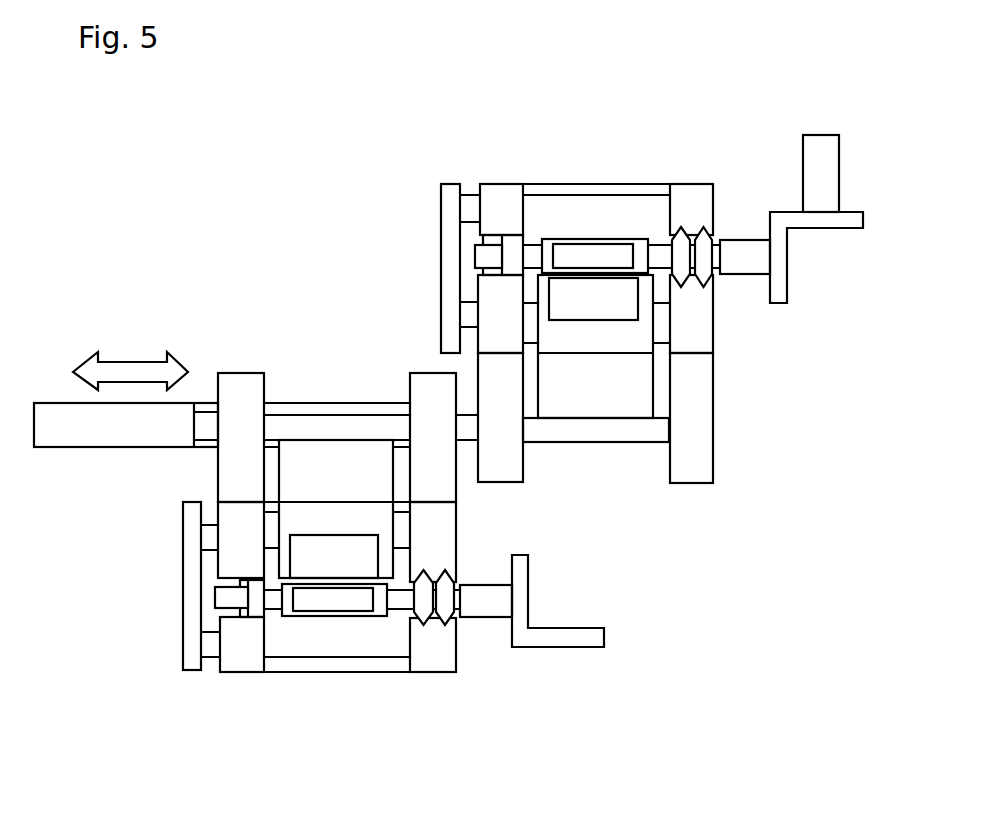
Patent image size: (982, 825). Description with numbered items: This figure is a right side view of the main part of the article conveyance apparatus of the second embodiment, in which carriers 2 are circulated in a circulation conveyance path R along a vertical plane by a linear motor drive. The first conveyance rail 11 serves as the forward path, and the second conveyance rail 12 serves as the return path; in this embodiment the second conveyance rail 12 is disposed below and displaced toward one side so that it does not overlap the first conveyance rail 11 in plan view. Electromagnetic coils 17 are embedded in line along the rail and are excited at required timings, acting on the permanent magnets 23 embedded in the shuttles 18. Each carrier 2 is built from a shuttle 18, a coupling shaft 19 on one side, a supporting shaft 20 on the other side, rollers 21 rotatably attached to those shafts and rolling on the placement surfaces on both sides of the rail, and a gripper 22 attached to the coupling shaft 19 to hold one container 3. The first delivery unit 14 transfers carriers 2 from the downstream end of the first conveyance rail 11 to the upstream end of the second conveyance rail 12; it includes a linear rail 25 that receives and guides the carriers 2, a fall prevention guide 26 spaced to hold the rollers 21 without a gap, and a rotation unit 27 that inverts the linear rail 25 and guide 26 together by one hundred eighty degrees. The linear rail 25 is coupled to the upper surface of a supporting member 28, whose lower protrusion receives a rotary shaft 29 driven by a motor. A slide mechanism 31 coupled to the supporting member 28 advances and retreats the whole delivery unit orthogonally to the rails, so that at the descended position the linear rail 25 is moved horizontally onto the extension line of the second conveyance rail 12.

The carrier 2 is at (752, 263).
The container 3 is at (813, 165).
The first conveyance rail 11 is at (632, 338).
The second conveyance rail 12 is at (333, 490).
The first delivery unit 14 is at (430, 215).
The electromagnetic coil 17 is at (585, 305).
The shuttle 18 is at (606, 238).
The coupling shaft 19 is at (737, 255).
The supporting shaft 20 is at (475, 256).
The roller 21 is at (700, 232).
The gripper 22 is at (827, 222).
The permanent magnet 23 is at (583, 257).
The linear rail 25 is at (492, 318).
The fall prevention guide 26 is at (573, 185).
The rotation unit 27 is at (643, 453).
The supporting member 28 is at (255, 385).
The rotary shaft 29 is at (613, 425).
The slide mechanism 31 is at (110, 438).
The circulation conveyance path R is at (197, 688).